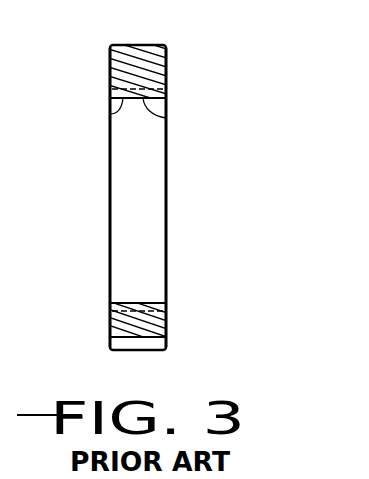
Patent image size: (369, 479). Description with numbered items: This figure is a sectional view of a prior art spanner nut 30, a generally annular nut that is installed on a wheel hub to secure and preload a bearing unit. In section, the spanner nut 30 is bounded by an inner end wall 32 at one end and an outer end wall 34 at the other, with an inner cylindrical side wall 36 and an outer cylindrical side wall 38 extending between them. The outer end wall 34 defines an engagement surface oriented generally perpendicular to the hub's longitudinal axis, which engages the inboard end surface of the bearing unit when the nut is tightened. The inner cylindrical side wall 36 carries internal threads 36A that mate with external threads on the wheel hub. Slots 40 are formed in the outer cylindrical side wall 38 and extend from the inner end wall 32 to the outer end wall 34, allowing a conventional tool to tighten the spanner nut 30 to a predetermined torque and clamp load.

The spanner nut 30 is at (197, 92).
The inner end wall 32 is at (109, 207).
The outer end wall 34 is at (167, 205).
The inner cylindrical side wall 36 is at (167, 118).
The internal threads 36A is at (109, 114).
The outer cylindrical side wall 38 is at (137, 45).
The slots 40 is at (167, 345).